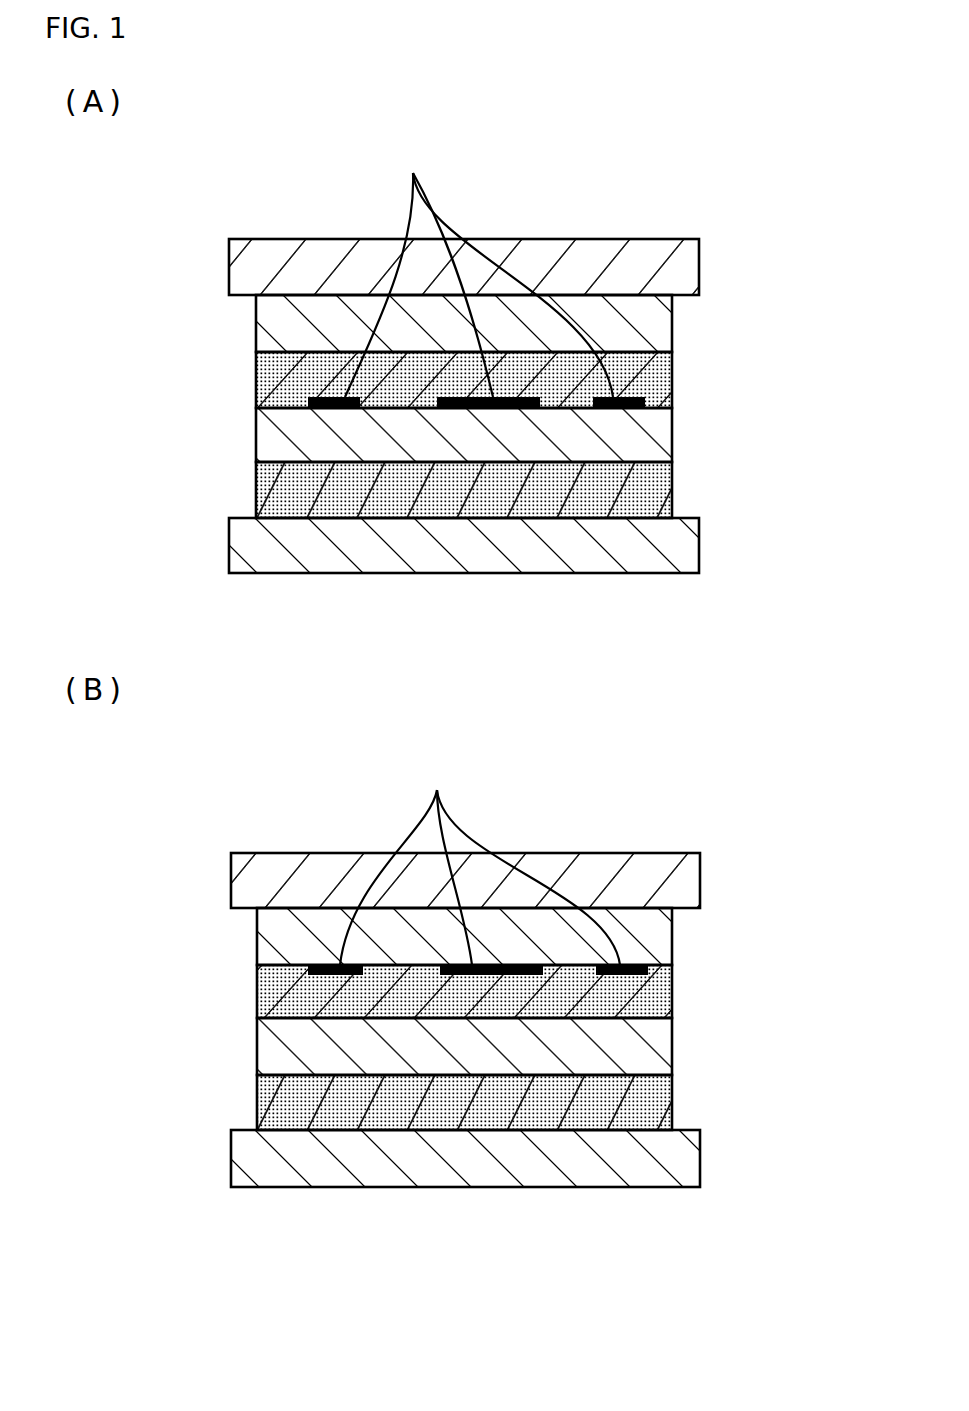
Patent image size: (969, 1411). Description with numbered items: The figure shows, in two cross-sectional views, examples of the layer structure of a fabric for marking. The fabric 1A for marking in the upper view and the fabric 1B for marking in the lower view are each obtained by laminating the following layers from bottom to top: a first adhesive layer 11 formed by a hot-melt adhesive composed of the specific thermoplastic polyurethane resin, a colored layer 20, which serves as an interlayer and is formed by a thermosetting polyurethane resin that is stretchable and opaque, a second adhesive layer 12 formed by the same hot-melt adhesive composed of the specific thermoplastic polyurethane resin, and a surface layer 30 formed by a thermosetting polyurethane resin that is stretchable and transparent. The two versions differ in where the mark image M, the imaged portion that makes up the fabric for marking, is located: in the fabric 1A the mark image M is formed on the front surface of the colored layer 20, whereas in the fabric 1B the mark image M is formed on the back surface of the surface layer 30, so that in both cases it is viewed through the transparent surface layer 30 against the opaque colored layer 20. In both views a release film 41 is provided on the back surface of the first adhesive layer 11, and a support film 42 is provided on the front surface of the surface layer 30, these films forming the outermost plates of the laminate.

The fabric for marking 1A is at (712, 198).
The fabric for marking 1B is at (700, 827).
The first adhesive layer 11 is at (673, 482).
The second adhesive layer 12 is at (673, 380).
The colored layer 20 is at (673, 435).
The surface layer 30 is at (667, 332).
The release film 41 is at (690, 553).
The support film 42 is at (688, 262).
The mark image M is at (480, 555).